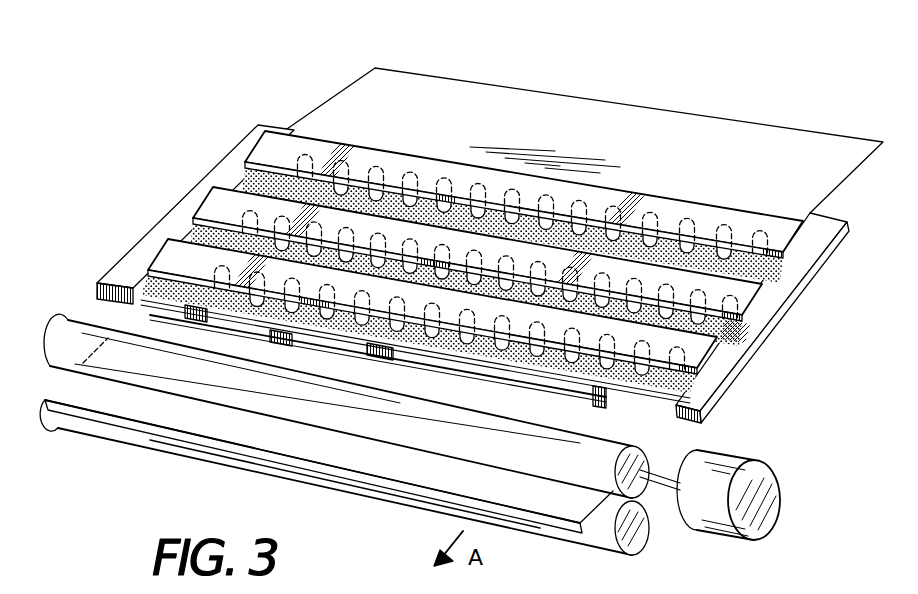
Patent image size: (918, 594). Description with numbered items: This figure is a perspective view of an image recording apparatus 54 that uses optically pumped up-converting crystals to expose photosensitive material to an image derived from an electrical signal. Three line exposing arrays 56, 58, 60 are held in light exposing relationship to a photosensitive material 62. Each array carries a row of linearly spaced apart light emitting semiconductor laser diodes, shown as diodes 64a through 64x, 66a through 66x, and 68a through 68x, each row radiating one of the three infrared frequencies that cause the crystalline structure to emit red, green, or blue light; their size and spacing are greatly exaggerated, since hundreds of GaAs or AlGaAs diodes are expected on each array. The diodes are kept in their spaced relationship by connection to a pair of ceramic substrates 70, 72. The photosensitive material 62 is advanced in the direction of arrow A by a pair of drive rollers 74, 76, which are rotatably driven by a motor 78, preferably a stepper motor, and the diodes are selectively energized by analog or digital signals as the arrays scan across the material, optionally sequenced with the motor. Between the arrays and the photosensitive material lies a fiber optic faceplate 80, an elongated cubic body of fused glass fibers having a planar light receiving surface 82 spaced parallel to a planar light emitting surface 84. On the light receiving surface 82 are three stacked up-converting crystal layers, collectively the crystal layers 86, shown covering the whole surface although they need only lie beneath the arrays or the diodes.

The image recording apparatus 54 is at (530, 116).
The line exposing array 56 is at (566, 186).
The line exposing array 58 is at (498, 253).
The line exposing array 60 is at (451, 316).
The photosensitive material 62 is at (413, 115).
The light emitting semiconductor laser diode 64a is at (306, 154).
The light emitting semiconductor laser diode 64x is at (755, 212).
The light emitting semiconductor laser diode 66a is at (248, 196).
The light emitting semiconductor laser diode 66x is at (738, 322).
The light emitting semiconductor laser diode 68a is at (212, 252).
The light emitting semiconductor laser diode 68x is at (685, 375).
The ceramic substrate 70 is at (801, 267).
The ceramic substrate 72 is at (187, 207).
The drive roller 74 is at (73, 343).
The drive roller 76 is at (82, 417).
The motor 78 is at (767, 500).
The fiber optic faceplate 80 is at (186, 313).
The light receiving surface 82 is at (518, 378).
The light emitting surface 84 is at (278, 336).
The crystal layers 86 is at (656, 388).